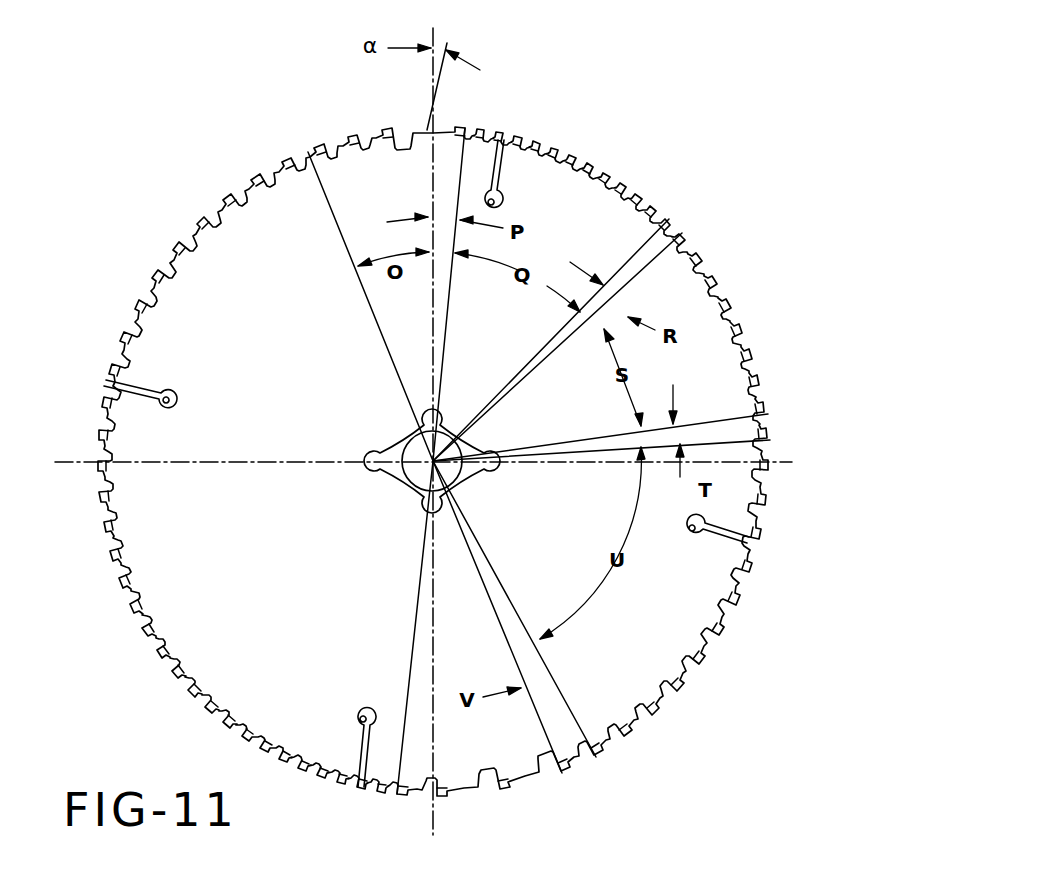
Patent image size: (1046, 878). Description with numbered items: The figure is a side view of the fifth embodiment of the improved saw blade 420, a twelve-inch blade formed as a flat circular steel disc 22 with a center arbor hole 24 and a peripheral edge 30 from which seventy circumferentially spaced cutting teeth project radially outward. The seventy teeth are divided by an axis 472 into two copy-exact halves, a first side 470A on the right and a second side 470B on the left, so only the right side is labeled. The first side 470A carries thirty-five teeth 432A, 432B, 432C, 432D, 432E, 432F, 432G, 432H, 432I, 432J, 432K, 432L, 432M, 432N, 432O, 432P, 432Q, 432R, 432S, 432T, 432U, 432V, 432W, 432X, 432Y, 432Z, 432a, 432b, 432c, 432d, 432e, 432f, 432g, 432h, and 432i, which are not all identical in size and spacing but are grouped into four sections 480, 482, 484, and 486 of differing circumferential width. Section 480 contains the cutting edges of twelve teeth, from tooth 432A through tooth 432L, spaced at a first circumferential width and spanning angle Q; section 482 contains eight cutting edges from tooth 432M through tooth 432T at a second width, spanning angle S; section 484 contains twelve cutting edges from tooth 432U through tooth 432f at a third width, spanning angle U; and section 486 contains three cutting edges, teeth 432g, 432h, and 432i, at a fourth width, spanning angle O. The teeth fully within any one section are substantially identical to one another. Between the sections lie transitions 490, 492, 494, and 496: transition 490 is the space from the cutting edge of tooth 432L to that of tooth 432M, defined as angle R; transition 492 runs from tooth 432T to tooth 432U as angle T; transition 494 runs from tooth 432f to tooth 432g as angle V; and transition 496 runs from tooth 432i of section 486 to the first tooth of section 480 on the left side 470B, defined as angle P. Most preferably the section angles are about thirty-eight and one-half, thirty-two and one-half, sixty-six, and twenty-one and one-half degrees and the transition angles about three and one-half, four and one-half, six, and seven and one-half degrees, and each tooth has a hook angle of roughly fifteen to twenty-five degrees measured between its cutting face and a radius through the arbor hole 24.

The saw blade 420 is at (190, 142).
The circular disc 22 is at (178, 359).
The center arbor hole 24 is at (404, 450).
The peripheral edge 30 is at (320, 151).
The first side 470A is at (610, 690).
The second side 470B is at (195, 306).
The axis 472 is at (423, 813).
The section 480 is at (582, 220).
The section 482 is at (590, 394).
The section 484 is at (682, 604).
The section 486 is at (510, 749).
The transition 490 is at (565, 333).
The transition 492 is at (603, 443).
The transition 494 is at (508, 618).
The transition 496 is at (443, 183).
The tooth 432A is at (466, 128).
The tooth 432B is at (486, 130).
The tooth 432C is at (517, 136).
The tooth 432D is at (535, 141).
The tooth 432E is at (553, 147).
The tooth 432F is at (571, 155).
The tooth 432G is at (589, 163).
The tooth 432H is at (606, 173).
The tooth 432I is at (622, 183).
The tooth 432J is at (638, 194).
The tooth 432K is at (653, 207).
The tooth 432L is at (667, 220).
The tooth 432M is at (682, 235).
The tooth 432N is at (699, 256).
The tooth 432O is at (715, 278).
The tooth 432P is at (729, 302).
The tooth 432Q is at (741, 327).
The tooth 432R is at (751, 353).
The tooth 432S is at (759, 379).
The tooth 432T is at (764, 406).
The tooth 432U is at (768, 432).
The tooth 432V is at (769, 464).
The tooth 432W is at (767, 499).
The tooth 432X is at (761, 533).
The tooth 432Y is at (752, 567).
The tooth 432Z is at (739, 600).
The tooth 432a is at (723, 631).
The tooth 432b is at (704, 660).
The tooth 432c is at (681, 687).
The tooth 432d is at (656, 712).
The tooth 432e is at (630, 733).
The tooth 432f is at (600, 753).
The tooth 432g is at (566, 769).
The tooth 432h is at (506, 789).
The tooth 432i is at (440, 792).